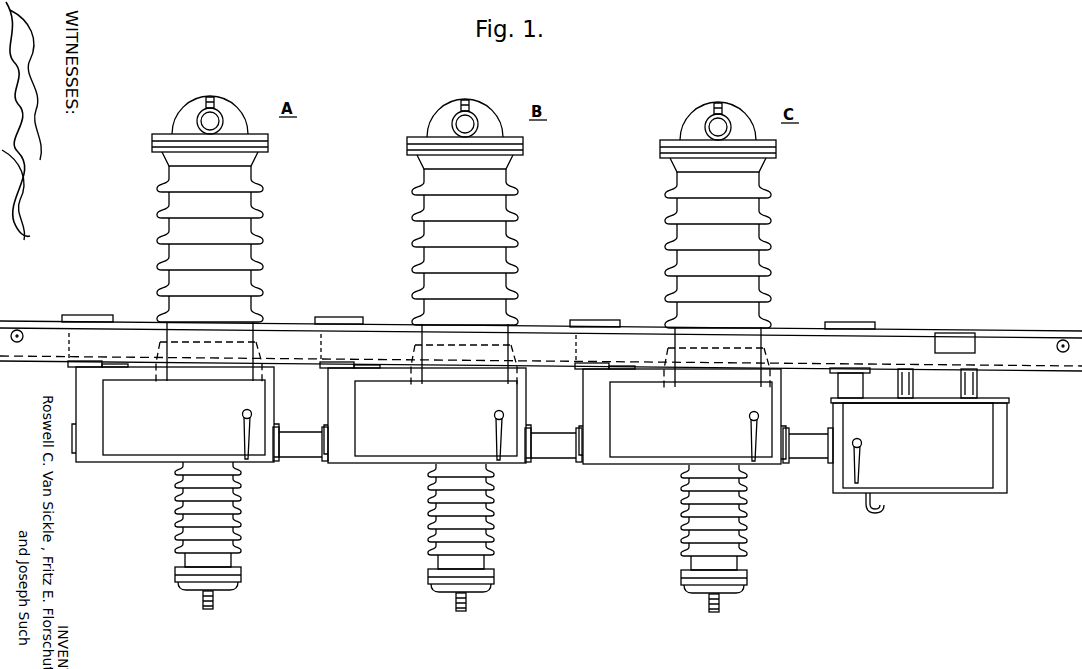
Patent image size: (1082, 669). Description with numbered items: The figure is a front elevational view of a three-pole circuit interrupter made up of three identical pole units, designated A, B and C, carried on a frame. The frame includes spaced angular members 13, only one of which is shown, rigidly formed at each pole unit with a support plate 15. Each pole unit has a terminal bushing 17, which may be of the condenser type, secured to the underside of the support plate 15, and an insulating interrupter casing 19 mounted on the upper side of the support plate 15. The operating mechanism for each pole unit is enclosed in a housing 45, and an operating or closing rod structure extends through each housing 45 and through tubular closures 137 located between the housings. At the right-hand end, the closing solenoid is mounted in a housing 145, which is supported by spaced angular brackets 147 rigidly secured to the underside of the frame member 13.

The angular frame member 13 is at (926, 330).
The support plate 15 is at (262, 350).
The terminal bushing 17 is at (235, 527).
The insulating interrupter casing 19 is at (173, 229).
The housing 45 is at (114, 463).
The tubular closure 137 is at (313, 455).
The solenoid housing 145 is at (838, 486).
The angular bracket 147 is at (962, 390).